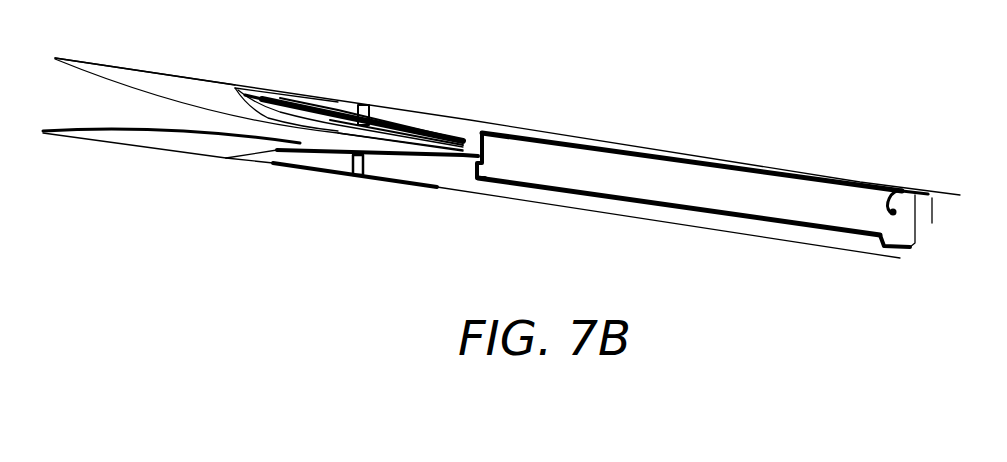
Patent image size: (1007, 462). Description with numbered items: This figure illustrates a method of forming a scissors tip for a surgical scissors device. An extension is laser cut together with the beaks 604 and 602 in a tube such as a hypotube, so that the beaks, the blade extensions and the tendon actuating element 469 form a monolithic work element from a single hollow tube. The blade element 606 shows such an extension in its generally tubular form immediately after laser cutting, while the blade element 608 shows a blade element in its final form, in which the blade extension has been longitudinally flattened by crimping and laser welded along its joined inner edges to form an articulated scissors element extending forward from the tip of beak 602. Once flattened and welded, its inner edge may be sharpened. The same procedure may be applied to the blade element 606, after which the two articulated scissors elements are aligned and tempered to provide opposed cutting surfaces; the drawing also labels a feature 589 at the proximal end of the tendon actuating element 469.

The blade element 606 is at (159, 73).
The blade element in final form 608 is at (137, 148).
The beak 604 is at (345, 102).
The beak 602 is at (358, 176).
The tendon actuating element 469 is at (652, 177).
The end cap curl 589 is at (902, 188).